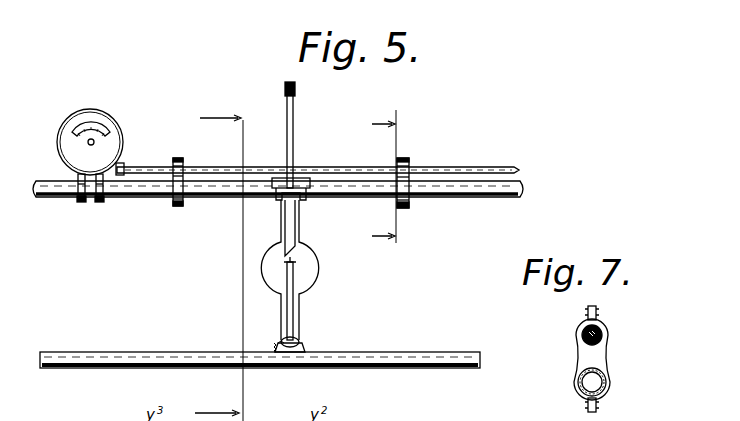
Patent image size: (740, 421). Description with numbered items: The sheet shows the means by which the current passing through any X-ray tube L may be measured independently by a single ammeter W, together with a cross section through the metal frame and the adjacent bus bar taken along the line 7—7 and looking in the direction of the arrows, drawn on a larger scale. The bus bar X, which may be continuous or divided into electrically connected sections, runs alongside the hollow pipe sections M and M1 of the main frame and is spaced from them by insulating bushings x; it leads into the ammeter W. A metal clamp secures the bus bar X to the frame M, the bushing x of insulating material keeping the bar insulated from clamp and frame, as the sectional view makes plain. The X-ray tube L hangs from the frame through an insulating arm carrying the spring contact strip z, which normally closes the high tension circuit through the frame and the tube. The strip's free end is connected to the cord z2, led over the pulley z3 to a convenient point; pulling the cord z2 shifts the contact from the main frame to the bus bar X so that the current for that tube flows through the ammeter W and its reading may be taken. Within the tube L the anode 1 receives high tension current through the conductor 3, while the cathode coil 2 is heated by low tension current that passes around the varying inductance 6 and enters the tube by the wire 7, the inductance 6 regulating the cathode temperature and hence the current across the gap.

In FIG. 5, the ammeter W is at (73, 116).
In FIG. 5, the bus bar X is at (494, 166).
In FIG. 7, the bus bar X is at (605, 336).
In FIG. 5, the insulator bushing x is at (178, 158).
In FIG. 7, the insulator bushing x is at (608, 348).
In FIG. 5, the main frame section M is at (527, 197).
In FIG. 7, the main frame section M is at (610, 386).
In FIG. 5, the main frame section M1 is at (78, 352).
In FIG. 5, the spring contact strip z is at (300, 182).
In FIG. 5, the cord z2 is at (293, 126).
In FIG. 5, the pulley z3 is at (296, 89).
In FIG. 5, the X-ray tube L is at (318, 263).
In FIG. 5, the anode 1 is at (268, 251).
In FIG. 5, the cathode 2 is at (286, 268).
In FIG. 5, the conductor 3 is at (305, 348).
In FIG. 5, the varying inductance 6 is at (276, 347).
In FIG. 5, the wire 7 is at (386, 176).